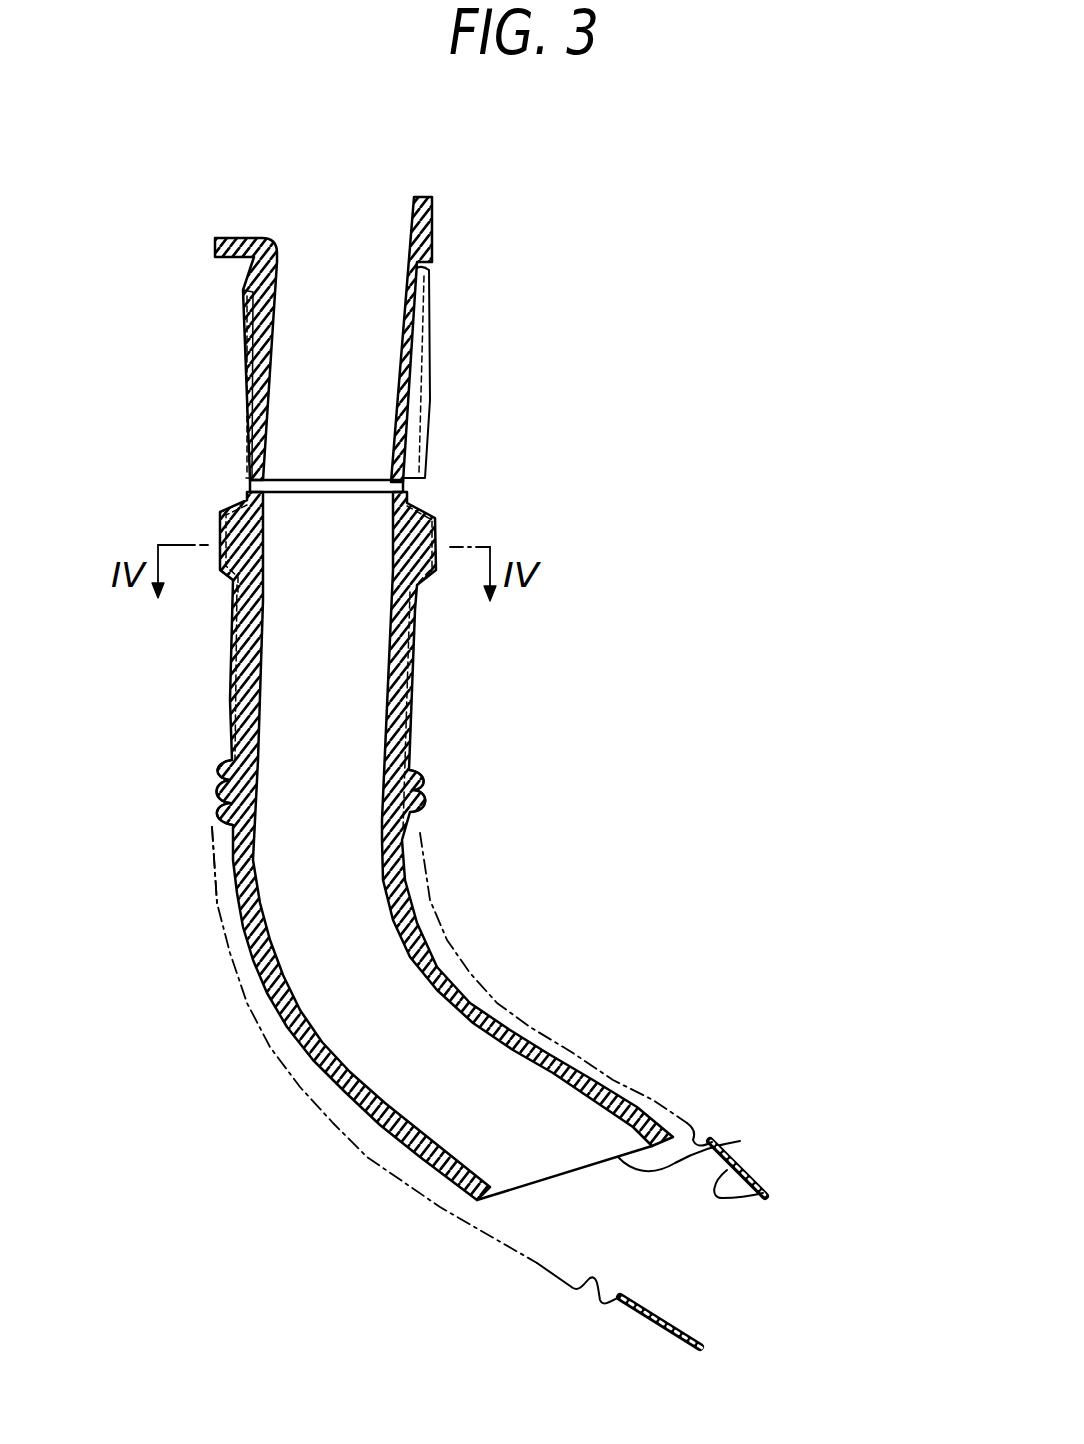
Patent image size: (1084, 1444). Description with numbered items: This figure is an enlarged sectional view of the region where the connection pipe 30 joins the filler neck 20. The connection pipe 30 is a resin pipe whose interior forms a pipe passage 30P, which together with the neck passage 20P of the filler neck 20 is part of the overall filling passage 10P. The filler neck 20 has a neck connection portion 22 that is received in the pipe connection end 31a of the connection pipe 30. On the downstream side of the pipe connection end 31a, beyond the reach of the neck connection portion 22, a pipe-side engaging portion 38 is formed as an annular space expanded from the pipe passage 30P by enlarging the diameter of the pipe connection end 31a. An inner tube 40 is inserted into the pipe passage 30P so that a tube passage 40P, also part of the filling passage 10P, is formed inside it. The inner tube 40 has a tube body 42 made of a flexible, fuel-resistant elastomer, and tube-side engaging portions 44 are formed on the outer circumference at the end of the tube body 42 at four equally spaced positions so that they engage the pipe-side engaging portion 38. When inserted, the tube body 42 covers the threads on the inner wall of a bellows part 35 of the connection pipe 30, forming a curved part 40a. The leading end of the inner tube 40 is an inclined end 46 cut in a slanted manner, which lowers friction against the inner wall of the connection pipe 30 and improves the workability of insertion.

The filler neck 20 is at (446, 223).
The neck passage 20P is at (387, 312).
The filling passage 10P is at (529, 736).
The neck connection portion 22 is at (428, 337).
The pipe connection end 31a is at (428, 383).
The pipe-side engaging portion 38 is at (225, 520).
The tube-side engaging portions 44 is at (227, 572).
The inner tube 40 is at (220, 678).
The tube body 42 is at (262, 742).
The tube passage 40P is at (227, 760).
The connection pipe 30 is at (430, 715).
The bellows part 35 is at (425, 798).
The curved part 40a is at (363, 890).
The inclined end 46 is at (712, 1139).
The pipe passage 30P is at (753, 1185).